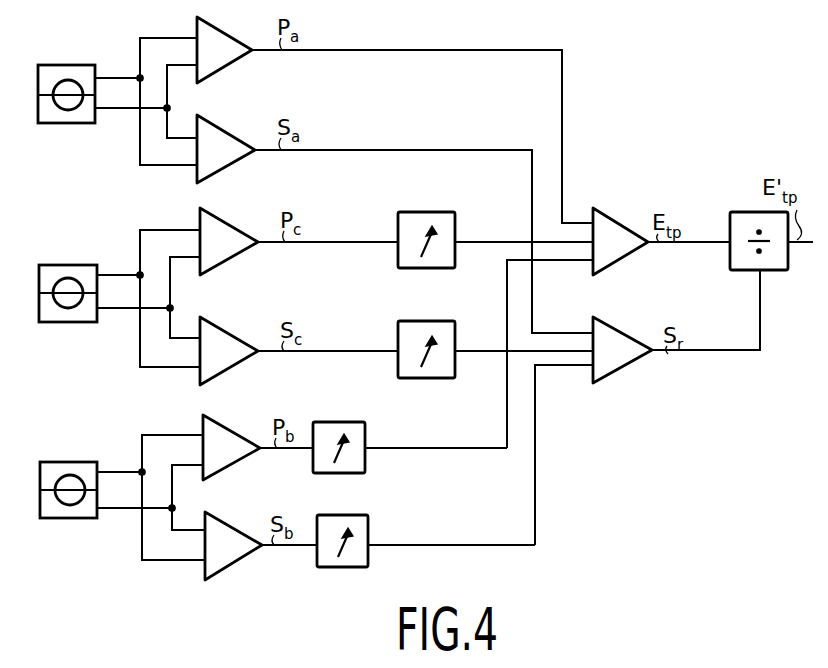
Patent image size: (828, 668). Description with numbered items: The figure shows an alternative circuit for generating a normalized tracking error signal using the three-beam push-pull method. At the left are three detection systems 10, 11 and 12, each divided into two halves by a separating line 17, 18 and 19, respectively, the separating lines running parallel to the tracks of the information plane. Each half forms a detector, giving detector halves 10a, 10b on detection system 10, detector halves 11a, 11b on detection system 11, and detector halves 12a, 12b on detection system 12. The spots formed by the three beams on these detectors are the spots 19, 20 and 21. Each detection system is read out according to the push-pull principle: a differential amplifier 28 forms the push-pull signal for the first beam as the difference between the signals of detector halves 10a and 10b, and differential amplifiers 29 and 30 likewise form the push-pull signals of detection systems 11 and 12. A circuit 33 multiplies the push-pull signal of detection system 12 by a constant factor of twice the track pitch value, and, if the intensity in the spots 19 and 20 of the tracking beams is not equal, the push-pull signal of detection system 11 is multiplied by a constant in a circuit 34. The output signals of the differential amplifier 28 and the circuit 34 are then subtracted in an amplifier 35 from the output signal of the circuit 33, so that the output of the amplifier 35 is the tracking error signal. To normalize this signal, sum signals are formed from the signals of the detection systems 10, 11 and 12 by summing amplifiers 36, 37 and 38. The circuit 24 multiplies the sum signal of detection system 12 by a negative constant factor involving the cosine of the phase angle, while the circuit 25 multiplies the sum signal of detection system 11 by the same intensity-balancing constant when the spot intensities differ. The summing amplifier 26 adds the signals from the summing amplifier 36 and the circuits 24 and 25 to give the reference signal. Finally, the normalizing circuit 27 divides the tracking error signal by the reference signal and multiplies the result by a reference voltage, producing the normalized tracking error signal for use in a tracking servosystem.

The detection system 10 is at (28, 111).
The detector half 10a is at (56, 78).
The detector half 10b is at (58, 116).
The separating line / spot 19 is at (80, 80).
The separating line 17 is at (94, 91).
The differential amplifier 28 is at (229, 70).
The summing amplifier 36 is at (227, 167).
The detection system 12 is at (29, 307).
The detector half 12a is at (50, 277).
The detector half 12b is at (62, 315).
The spot 21 is at (78, 280).
The differential amplifier 30 is at (230, 262).
The summing amplifier 38 is at (232, 364).
The circuit 33 is at (421, 277).
The circuit 24 is at (421, 388).
The amplifier 35 is at (622, 263).
The summing amplifier 26 is at (622, 382).
The normalizing circuit 27 is at (774, 271).
The detection system 11 is at (29, 504).
The detector half 11a is at (54, 472).
The detector half 11b is at (57, 515).
The spot 20 is at (78, 476).
The separating line 18 is at (94, 486).
The differential amplifier 29 is at (234, 465).
The summing amplifier 37 is at (237, 558).
The circuit 34 is at (364, 473).
The circuit 25 is at (367, 567).